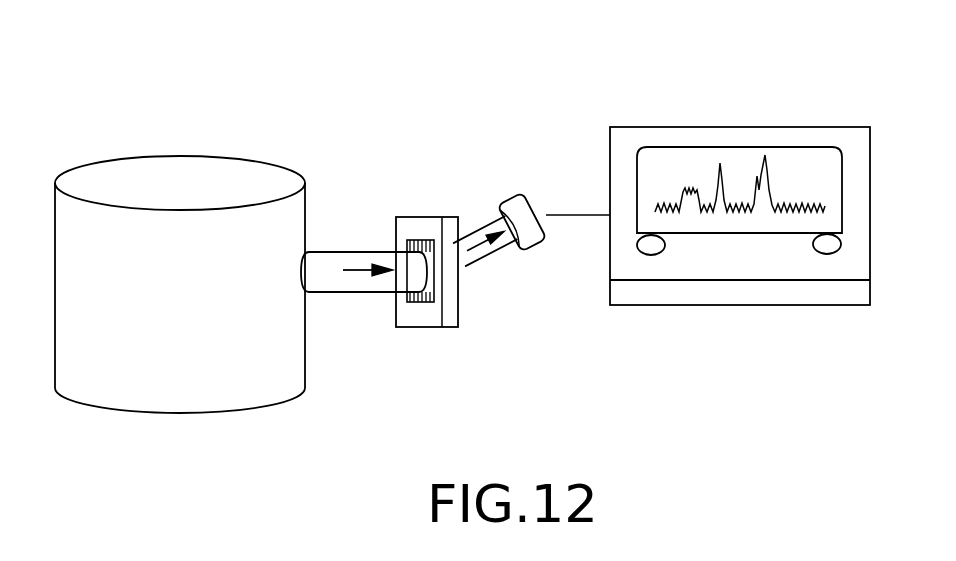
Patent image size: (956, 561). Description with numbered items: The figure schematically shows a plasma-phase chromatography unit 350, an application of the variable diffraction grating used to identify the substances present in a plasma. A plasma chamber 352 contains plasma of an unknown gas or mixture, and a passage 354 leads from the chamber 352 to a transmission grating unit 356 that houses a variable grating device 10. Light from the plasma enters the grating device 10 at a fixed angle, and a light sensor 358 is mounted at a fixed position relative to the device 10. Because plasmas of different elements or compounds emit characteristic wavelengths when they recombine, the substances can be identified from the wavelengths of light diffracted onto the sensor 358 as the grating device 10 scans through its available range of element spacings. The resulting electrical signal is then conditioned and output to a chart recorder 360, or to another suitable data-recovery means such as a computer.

The plasma-phase chromatography unit 350 is at (337, 106).
The plasma chamber 352 is at (225, 168).
The passage 354 is at (340, 258).
The transmission grating unit 356 is at (453, 310).
The variable grating device 10 is at (423, 297).
The light sensor 358 is at (518, 212).
The chart recorder 360 is at (660, 133).